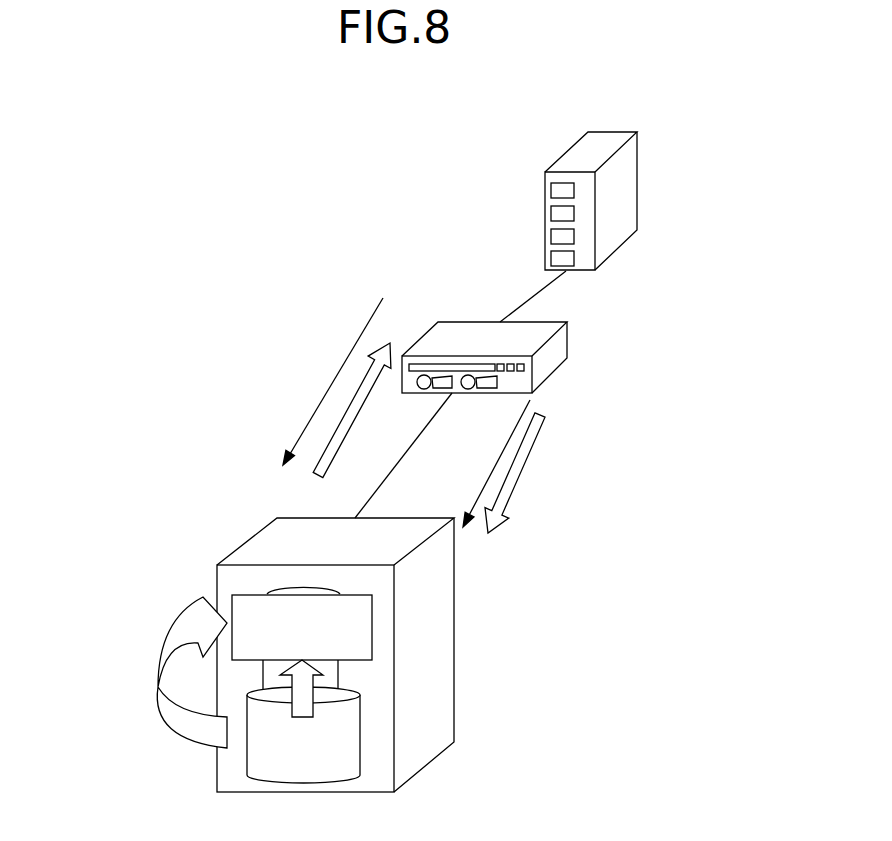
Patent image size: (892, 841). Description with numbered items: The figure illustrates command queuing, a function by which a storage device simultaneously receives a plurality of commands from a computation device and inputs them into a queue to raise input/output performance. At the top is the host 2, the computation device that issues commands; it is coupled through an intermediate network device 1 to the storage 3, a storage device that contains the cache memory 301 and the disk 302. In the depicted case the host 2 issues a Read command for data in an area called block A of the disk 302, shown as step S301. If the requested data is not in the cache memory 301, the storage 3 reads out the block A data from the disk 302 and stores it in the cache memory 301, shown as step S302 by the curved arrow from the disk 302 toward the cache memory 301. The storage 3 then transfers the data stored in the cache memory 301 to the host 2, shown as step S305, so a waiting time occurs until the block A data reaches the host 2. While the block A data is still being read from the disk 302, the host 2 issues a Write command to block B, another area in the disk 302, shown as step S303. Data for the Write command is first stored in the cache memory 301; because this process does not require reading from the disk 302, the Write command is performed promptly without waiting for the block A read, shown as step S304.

The router 1 is at (452, 322).
The host 2 is at (637, 177).
The storage 3 is at (371, 655).
The cache memory 301 is at (372, 628).
The disk 302 is at (360, 715).
The Read command issuing step S301 is at (340, 368).
The disk read step S302 is at (157, 687).
The Write command issuing step S303 is at (528, 408).
The Write command processing step S304 is at (528, 463).
The data transfer step S305 is at (313, 476).